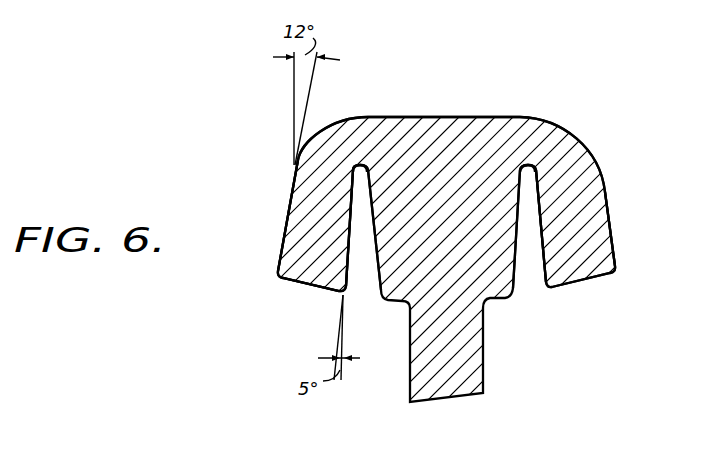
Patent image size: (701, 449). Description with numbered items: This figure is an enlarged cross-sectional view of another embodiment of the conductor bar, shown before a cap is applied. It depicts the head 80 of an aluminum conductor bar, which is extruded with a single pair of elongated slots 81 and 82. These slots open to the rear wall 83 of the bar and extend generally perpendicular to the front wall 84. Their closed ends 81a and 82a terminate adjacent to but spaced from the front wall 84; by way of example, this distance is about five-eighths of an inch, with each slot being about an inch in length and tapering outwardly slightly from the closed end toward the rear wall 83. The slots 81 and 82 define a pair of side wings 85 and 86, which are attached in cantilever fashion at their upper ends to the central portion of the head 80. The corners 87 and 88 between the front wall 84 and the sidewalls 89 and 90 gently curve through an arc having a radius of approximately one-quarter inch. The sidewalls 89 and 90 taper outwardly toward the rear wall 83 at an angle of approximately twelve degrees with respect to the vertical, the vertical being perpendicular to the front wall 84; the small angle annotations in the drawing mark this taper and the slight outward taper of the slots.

The head 80 is at (408, 303).
The elongated slot 81 is at (365, 282).
The closed end of slot 81a is at (353, 168).
The elongated slot 82 is at (532, 273).
The closed end of slot 82a is at (530, 167).
The rear wall 83 is at (297, 280).
The front wall 84 is at (440, 117).
The side wing 85 is at (300, 208).
The side wing 86 is at (590, 208).
The corner 87 is at (317, 137).
The corner 88 is at (567, 133).
The sidewall 89 is at (280, 244).
The sidewall 90 is at (611, 237).